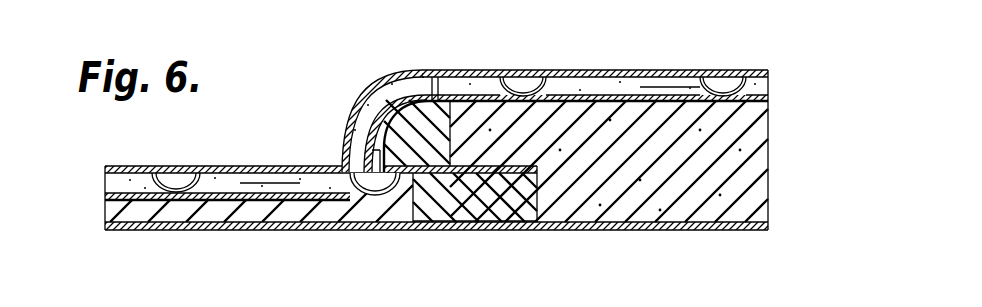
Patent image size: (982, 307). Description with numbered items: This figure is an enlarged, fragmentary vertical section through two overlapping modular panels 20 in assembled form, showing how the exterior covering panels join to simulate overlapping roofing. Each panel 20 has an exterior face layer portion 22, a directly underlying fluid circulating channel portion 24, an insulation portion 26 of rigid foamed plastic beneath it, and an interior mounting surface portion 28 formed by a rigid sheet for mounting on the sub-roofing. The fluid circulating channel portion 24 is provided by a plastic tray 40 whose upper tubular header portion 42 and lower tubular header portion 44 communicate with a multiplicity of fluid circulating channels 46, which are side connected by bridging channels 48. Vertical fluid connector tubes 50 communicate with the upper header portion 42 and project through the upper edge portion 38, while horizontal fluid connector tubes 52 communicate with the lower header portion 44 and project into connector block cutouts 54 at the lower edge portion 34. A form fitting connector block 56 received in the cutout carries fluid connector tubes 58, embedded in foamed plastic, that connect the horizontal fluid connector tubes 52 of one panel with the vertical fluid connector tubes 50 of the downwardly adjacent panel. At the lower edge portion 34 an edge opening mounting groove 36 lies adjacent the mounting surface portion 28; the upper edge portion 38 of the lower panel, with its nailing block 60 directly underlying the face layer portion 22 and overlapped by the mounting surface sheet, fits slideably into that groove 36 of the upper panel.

The modular panel 20 is at (116, 163).
The exterior face layer portion 22 is at (227, 168).
The fluid circulating channel portion 24 is at (113, 183).
The insulation portion 26 is at (245, 217).
The interior mounting surface portion 28 is at (138, 227).
The lower edge portion 34 is at (352, 128).
The edge opening mounting groove 36 is at (518, 228).
The upper edge portion 38 is at (567, 220).
The plastic tray 40 is at (110, 197).
The upper tubular header portion 42 is at (375, 188).
The lower tubular header portion 44 is at (527, 87).
The fluid circulating channels 46 is at (277, 180).
The bridging channels 48 is at (178, 183).
The vertical fluid connector tubes 50 is at (348, 145).
The horizontal fluid connector tubes 52 is at (440, 67).
The connector block cutouts 54 is at (384, 88).
The connector block 56 is at (358, 105).
The fluid connector tubes 58 is at (418, 68).
The nailing block 60 is at (477, 200).